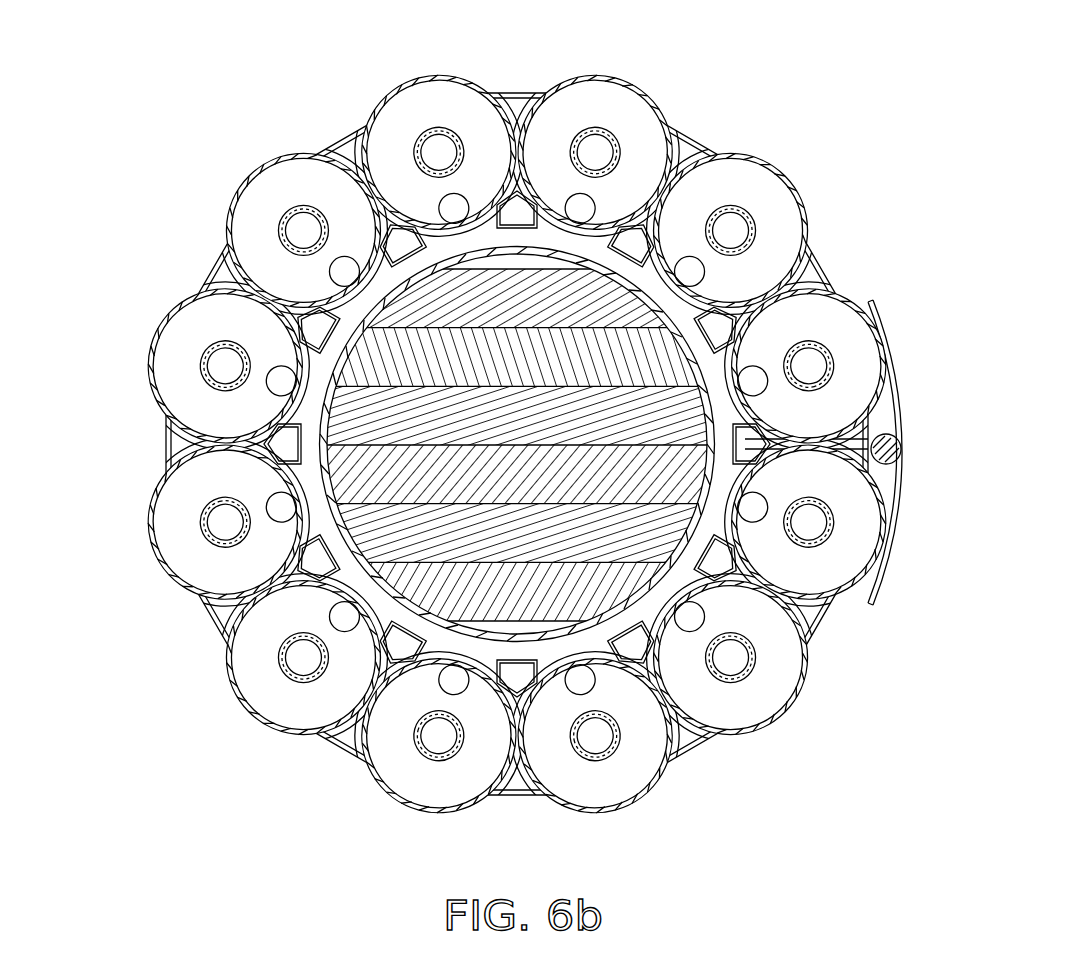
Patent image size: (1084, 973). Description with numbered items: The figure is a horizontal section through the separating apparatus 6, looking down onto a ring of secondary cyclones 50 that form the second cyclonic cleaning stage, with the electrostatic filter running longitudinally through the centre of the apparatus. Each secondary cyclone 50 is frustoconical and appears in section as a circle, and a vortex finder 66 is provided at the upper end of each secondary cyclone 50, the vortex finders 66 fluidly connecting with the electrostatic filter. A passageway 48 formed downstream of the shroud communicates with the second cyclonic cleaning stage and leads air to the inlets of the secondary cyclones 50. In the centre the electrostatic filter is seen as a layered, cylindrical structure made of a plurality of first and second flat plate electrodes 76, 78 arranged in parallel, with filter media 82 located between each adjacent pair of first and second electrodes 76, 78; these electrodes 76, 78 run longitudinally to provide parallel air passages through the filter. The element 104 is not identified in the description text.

The separating apparatus 6 is at (498, 442).
The passageway 48 is at (592, 252).
The secondary cyclone 50 is at (175, 543).
The vortex finder 66 is at (202, 370).
The first flat plate electrode 76 is at (517, 600).
The second flat plate electrode 78 is at (557, 660).
The filter media 82 is at (258, 594).
The laminated core 104 is at (410, 583).